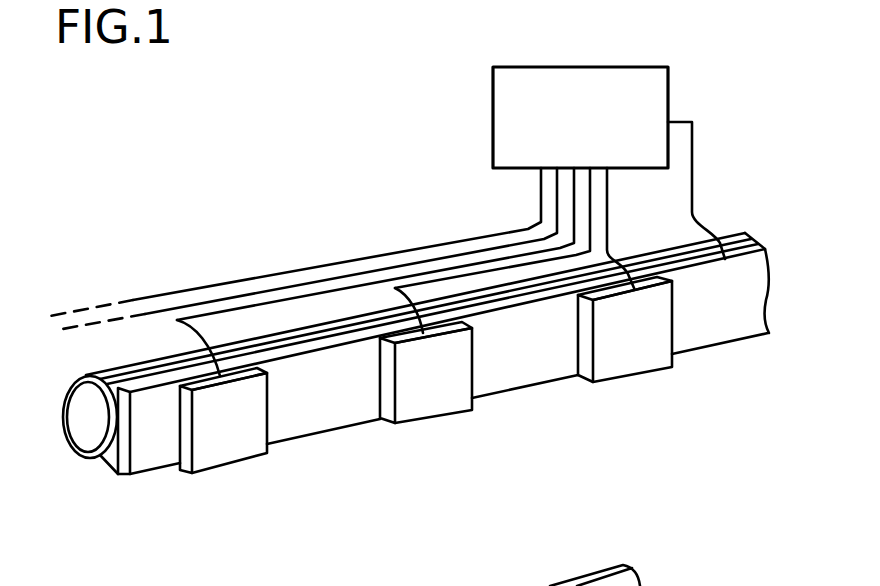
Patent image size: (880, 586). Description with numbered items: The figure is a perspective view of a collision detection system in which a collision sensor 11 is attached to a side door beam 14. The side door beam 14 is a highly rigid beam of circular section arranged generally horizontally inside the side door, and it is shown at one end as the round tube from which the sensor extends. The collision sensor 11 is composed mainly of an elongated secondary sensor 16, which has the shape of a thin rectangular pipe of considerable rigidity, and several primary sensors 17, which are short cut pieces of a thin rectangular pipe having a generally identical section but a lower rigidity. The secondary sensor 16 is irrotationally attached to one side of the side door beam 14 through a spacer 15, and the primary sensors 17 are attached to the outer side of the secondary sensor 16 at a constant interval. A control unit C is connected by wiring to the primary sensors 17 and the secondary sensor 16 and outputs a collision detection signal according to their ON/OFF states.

The collision sensor 11 is at (620, 397).
The side door beam 14 is at (72, 415).
The spacer 15 is at (110, 462).
The secondary sensor 16 is at (148, 455).
The primary sensors 17 is at (233, 445).
The control unit C is at (653, 88).